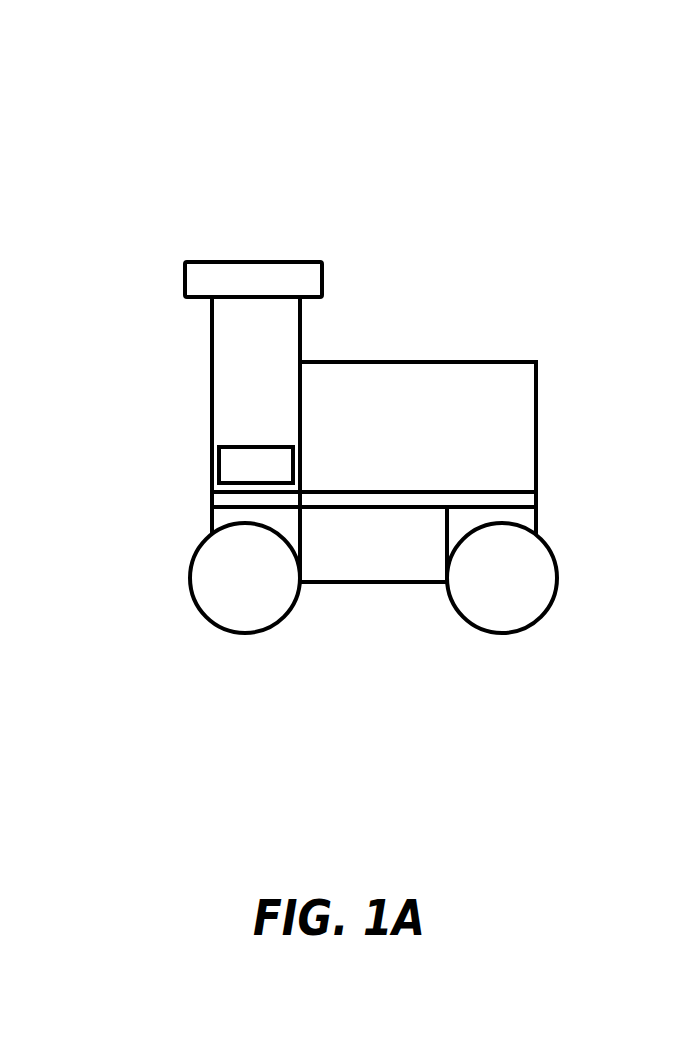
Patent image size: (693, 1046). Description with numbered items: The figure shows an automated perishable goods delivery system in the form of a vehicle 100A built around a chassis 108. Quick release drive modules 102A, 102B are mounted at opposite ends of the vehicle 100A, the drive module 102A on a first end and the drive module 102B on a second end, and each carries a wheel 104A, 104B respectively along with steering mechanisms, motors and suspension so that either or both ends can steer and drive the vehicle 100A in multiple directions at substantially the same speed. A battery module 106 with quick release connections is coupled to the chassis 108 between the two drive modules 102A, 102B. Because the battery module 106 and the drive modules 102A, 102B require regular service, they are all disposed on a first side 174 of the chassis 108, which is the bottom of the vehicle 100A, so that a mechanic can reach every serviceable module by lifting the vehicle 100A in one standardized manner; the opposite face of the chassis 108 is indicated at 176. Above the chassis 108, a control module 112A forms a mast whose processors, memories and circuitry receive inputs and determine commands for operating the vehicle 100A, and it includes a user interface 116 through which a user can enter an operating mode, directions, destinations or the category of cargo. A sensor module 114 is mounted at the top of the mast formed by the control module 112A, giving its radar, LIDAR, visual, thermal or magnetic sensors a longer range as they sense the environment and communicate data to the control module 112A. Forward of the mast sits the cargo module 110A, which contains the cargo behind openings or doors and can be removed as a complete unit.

The vehicle 100A is at (205, 153).
The sensor module 114 is at (283, 260).
The control module 112A is at (210, 403).
The user interface 116 is at (218, 458).
The cargo module 110A is at (473, 360).
The chassis 108 is at (210, 495).
The upper plate 176 is at (515, 492).
The first side 174 is at (537, 508).
The drive module 102B is at (208, 520).
The drive module 102A is at (537, 527).
The battery module 106 is at (365, 585).
The wheel 104B is at (230, 632).
The wheel 104A is at (520, 632).